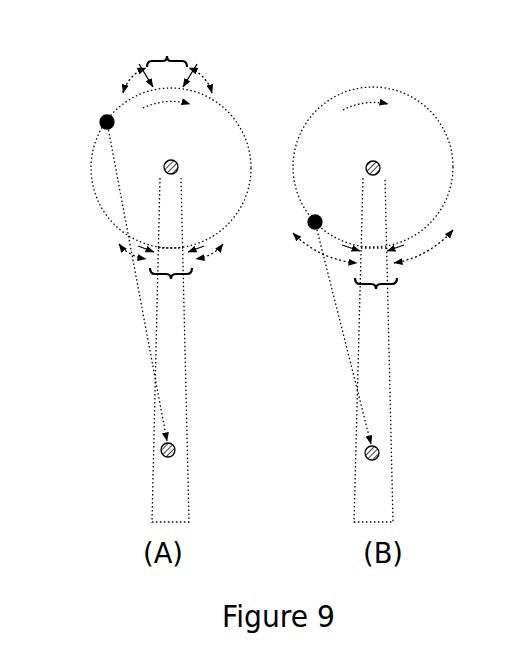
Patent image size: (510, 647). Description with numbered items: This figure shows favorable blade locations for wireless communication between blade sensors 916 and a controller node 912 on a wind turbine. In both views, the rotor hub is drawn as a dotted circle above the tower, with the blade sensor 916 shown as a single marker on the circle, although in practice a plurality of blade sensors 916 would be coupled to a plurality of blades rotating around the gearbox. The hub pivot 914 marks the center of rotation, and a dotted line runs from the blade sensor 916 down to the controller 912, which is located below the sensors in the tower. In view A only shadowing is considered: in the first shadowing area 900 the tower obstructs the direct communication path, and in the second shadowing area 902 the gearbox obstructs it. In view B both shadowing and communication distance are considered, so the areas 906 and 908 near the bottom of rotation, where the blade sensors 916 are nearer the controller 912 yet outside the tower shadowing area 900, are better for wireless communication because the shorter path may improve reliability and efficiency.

The first shadowing area 900 is at (165, 290).
The second shadowing area 902 is at (172, 44).
The favorable communication area 906 is at (312, 262).
The favorable communication area 908 is at (432, 258).
The controller node 912 is at (175, 447).
The upper pivot axis 914 is at (178, 165).
The blade sensor 916 is at (103, 118).